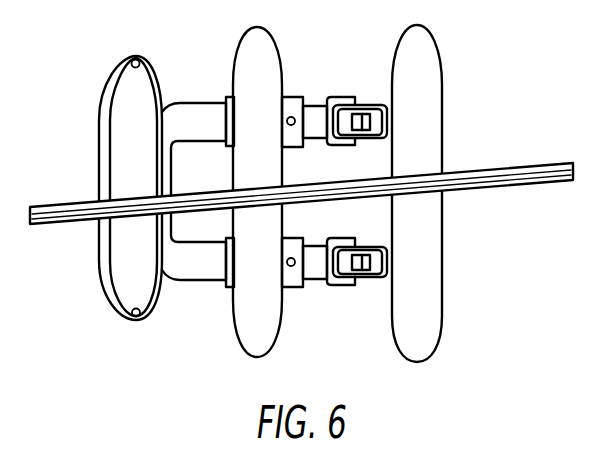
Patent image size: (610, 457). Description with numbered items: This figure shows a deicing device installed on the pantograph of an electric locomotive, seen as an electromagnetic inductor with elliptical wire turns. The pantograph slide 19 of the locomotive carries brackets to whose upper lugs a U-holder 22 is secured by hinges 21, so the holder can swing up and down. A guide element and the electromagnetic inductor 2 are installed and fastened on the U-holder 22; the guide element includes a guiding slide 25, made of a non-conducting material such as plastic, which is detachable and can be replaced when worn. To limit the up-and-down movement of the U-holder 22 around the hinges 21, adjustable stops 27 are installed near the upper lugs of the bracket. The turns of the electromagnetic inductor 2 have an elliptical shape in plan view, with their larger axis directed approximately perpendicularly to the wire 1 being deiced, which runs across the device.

The wire 1 is at (500, 176).
The electromagnetic inductor 2 is at (115, 284).
The pantograph slide 19 is at (427, 55).
The hinges 21 is at (378, 273).
The U-holder 22 is at (211, 274).
The guiding slide 25 is at (266, 56).
The adjustable stops 27 is at (359, 256).